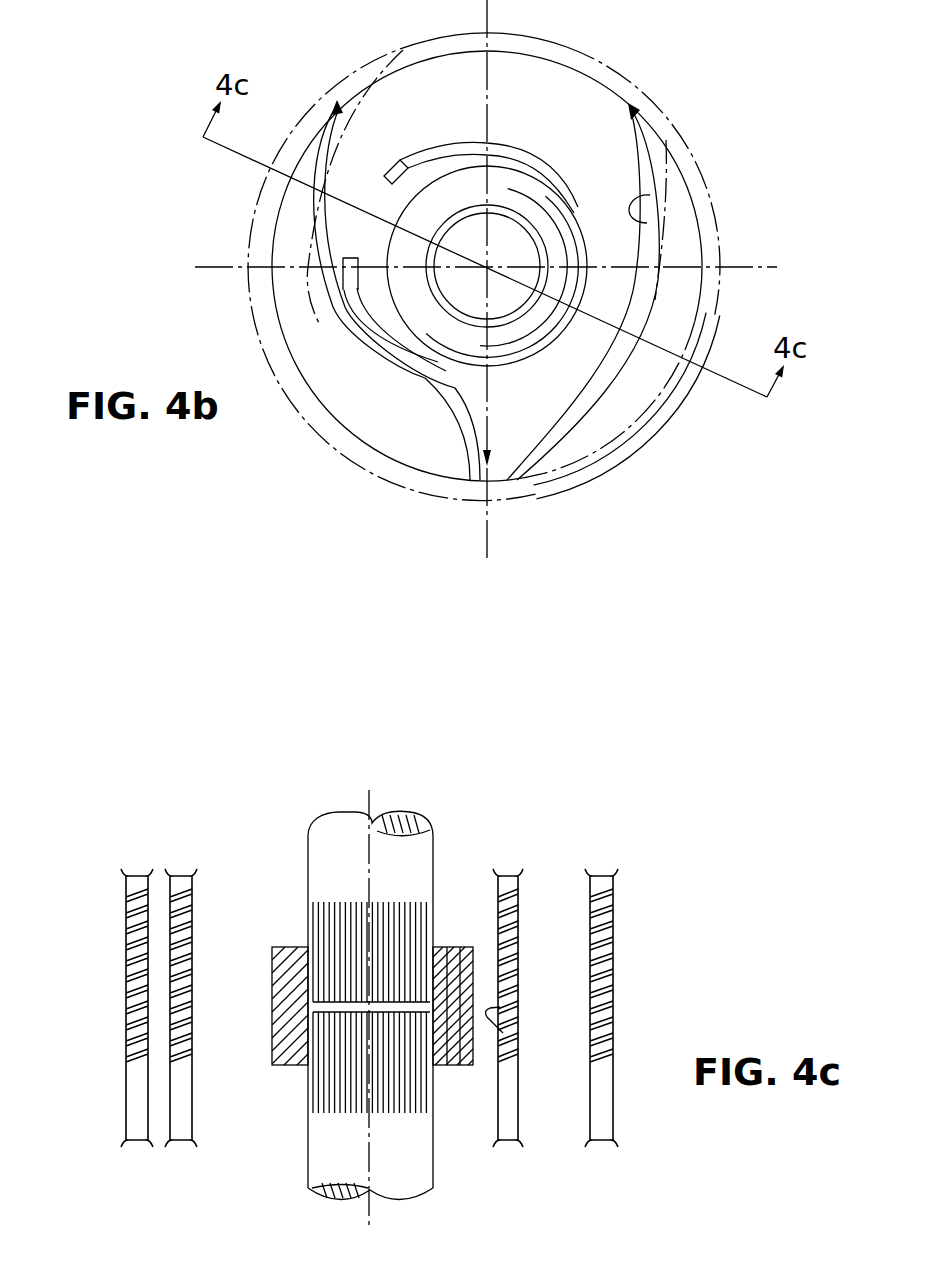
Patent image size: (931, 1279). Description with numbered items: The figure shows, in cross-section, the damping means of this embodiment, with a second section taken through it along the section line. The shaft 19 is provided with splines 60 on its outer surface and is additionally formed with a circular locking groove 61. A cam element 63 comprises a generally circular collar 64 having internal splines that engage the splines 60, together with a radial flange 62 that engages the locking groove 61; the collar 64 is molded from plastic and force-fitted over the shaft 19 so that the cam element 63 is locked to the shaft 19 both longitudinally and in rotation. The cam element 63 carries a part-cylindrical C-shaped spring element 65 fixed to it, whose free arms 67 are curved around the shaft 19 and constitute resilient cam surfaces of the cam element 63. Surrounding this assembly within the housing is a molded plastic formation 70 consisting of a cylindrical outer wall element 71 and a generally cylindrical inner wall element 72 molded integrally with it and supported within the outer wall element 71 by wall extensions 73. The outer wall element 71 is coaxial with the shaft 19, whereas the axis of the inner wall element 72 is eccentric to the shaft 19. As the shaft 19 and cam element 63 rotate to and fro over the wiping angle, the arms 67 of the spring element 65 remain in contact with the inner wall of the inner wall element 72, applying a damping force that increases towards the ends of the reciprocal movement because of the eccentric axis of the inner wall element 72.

In FIG. 4b, the shaft 19 is at (513, 238).
In FIG. 4c, the shaft 19 is at (320, 843).
In FIG. 4c, the splines 60 is at (325, 1087).
In FIG. 4c, the circular locking groove 61 is at (347, 1006).
In FIG. 4c, the radial flange 62 is at (440, 1067).
In FIG. 4b, the cam element 63 is at (532, 149).
In FIG. 4c, the cam element 63 is at (262, 1018).
In FIG. 4c, the collar 64 is at (270, 980).
In FIG. 4b, the spring element 65 is at (452, 138).
In FIG. 4c, the spring element 65 is at (474, 867).
In FIG. 4b, the free arms 67 is at (352, 299).
In FIG. 4b, the molded plastic formation 70 is at (320, 456).
In FIG. 4b, the cylindrical outer wall element 71 is at (637, 441).
In FIG. 4c, the cylindrical outer wall element 71 is at (136, 1006).
In FIG. 4b, the inner wall element 72 is at (633, 108).
In FIG. 4c, the inner wall element 72 is at (182, 1070).
In FIG. 4b, the wall extensions 73 is at (650, 195).
In FIG. 4c, the wall extensions 73 is at (503, 1033).